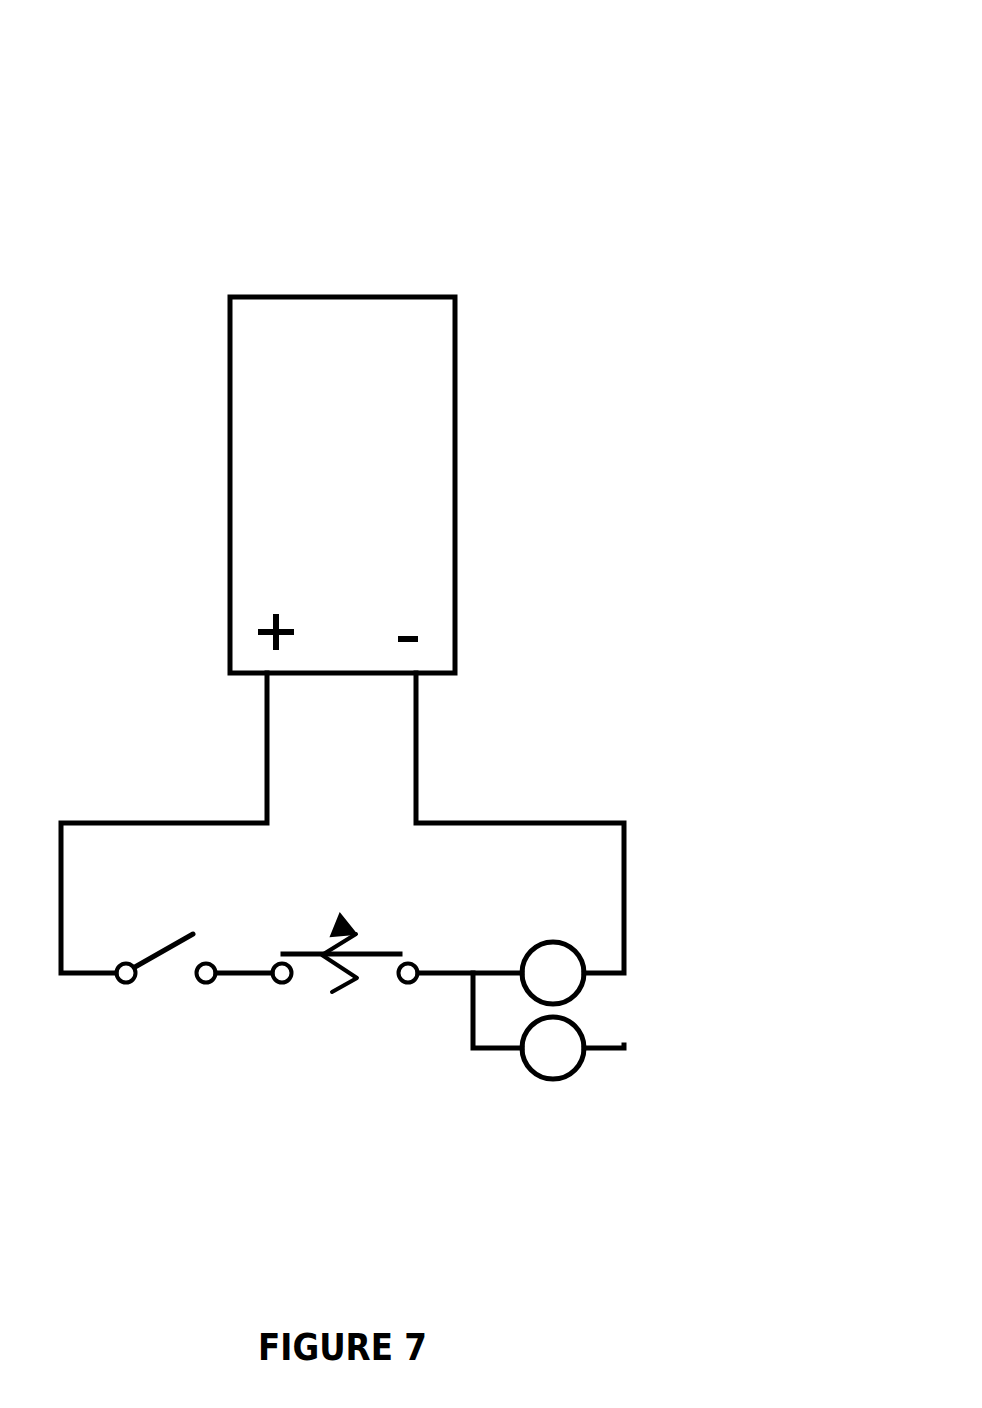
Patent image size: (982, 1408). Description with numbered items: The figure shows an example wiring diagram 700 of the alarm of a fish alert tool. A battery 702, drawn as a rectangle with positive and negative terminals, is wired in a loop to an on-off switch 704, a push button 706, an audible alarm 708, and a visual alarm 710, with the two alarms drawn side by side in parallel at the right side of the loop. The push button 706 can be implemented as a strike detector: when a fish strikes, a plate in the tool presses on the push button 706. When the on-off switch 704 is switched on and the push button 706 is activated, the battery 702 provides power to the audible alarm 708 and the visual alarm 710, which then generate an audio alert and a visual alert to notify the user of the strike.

The wiring diagram 700 is at (803, 51).
The battery 702 is at (417, 297).
The on-off switch 704 is at (157, 975).
The push button 706 is at (332, 994).
The audible alarm 708 is at (582, 952).
The visual alarm 710 is at (585, 1033).